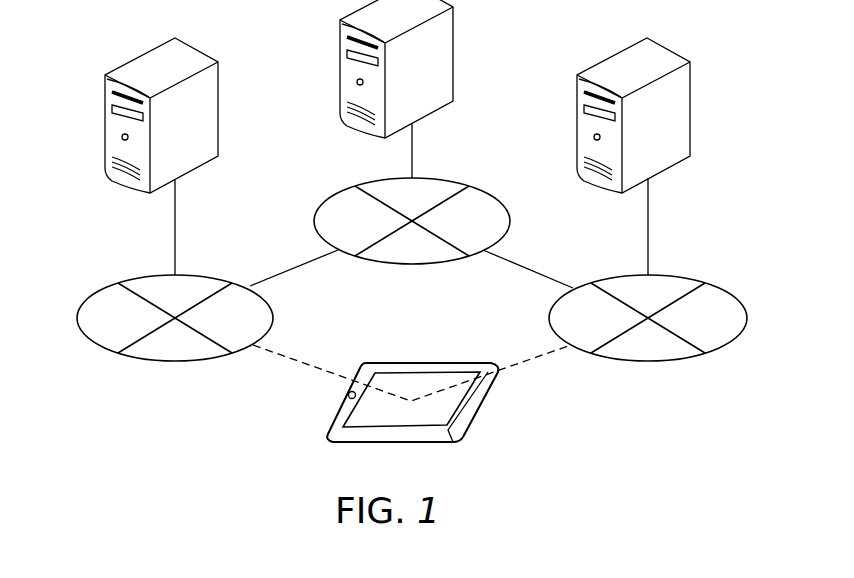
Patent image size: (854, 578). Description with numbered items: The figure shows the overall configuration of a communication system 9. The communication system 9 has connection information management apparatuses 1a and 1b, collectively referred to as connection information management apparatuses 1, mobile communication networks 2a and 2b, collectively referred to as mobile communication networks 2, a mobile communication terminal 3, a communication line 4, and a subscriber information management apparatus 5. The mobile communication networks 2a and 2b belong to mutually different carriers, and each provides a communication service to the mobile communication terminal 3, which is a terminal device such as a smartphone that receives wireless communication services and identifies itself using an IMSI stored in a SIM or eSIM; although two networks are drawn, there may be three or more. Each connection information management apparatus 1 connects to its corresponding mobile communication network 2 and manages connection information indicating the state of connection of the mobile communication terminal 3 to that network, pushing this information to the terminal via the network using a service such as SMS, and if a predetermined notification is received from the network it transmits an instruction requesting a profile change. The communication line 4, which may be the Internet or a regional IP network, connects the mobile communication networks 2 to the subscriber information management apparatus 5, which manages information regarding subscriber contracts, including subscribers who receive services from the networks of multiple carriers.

The connection information management apparatus 1 is at (397, 156).
The connection information management apparatus 1a is at (219, 108).
The connection information management apparatus 1b is at (577, 119).
The mobile communication network 2 is at (406, 293).
The mobile communication network 2a is at (110, 282).
The mobile communication network 2b is at (622, 282).
The mobile communication terminal 3 is at (486, 406).
The communication line 4 is at (316, 208).
The subscriber information management apparatus 5 is at (455, 70).
The communication system 9 is at (168, 392).